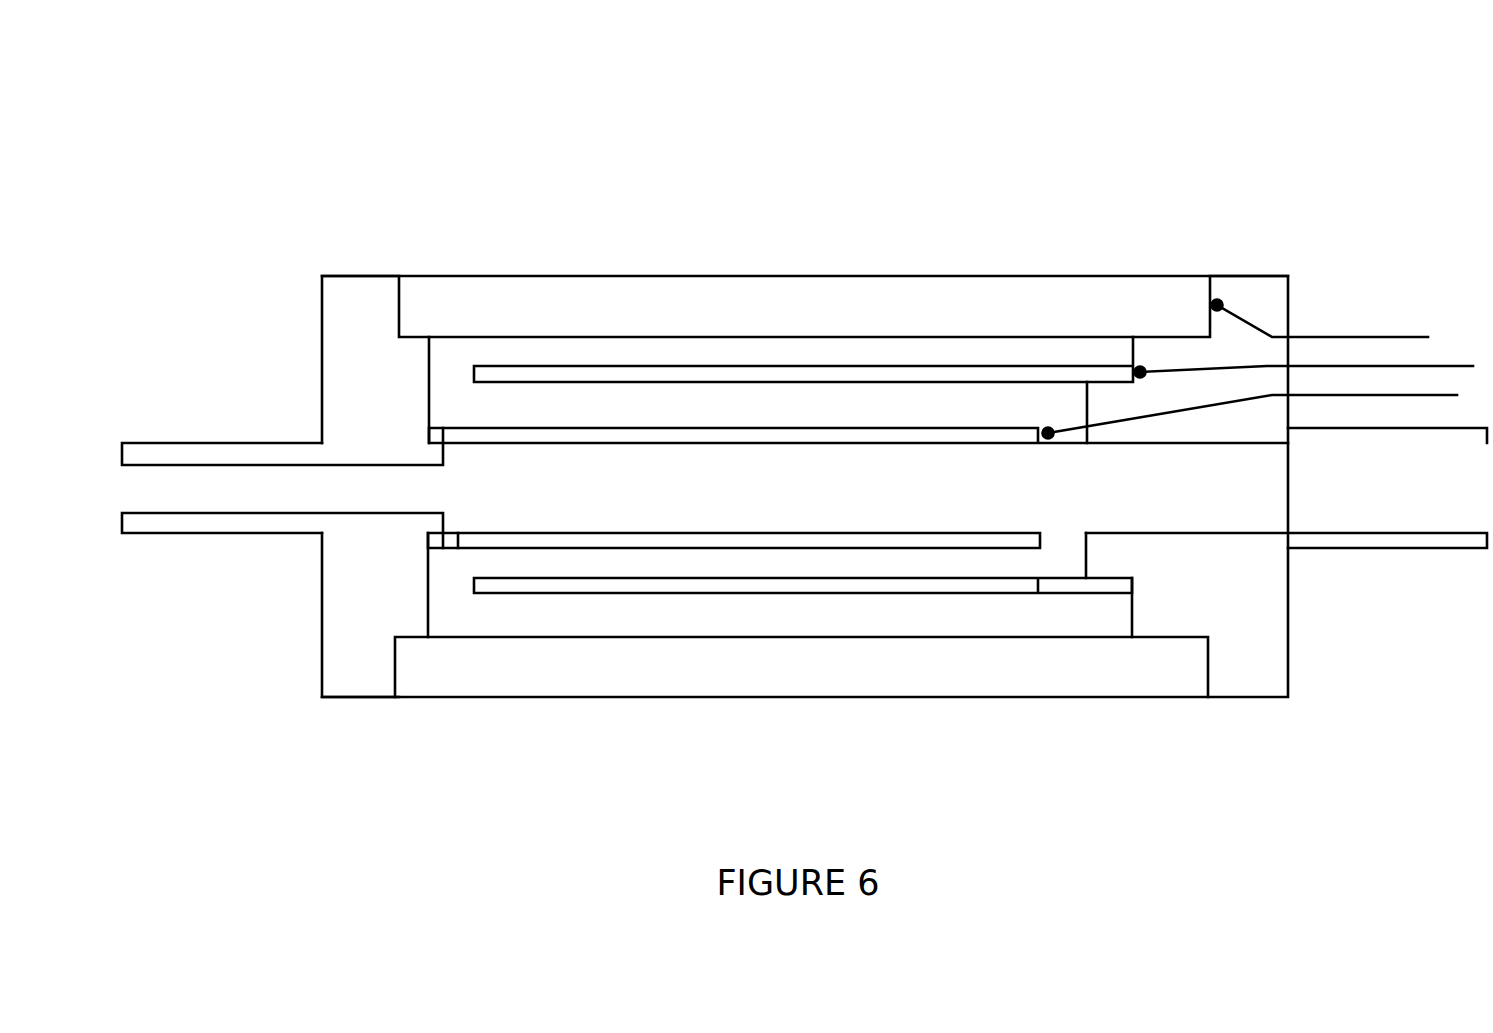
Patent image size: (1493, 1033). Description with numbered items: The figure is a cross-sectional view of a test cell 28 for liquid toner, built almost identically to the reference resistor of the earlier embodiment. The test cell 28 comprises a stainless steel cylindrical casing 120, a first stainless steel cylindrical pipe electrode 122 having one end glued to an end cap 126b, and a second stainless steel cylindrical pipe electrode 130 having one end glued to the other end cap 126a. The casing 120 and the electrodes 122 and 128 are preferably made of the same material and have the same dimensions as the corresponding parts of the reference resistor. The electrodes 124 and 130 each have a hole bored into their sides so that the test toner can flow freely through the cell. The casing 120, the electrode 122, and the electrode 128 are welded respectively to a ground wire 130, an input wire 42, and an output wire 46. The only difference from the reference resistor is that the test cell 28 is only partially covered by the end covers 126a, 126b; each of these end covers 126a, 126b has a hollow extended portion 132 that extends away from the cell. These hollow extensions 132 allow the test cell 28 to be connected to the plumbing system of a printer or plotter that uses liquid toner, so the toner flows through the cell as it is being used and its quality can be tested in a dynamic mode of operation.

The test cell 28 is at (770, 148).
The input wire 42 is at (1458, 366).
The output wire 46 is at (1368, 395).
The cylindrical casing 120 is at (968, 312).
The first cylindrical pipe electrode 122 is at (668, 375).
The electrode 124 is at (1063, 585).
The end cap 126a is at (340, 323).
The end cap 126b is at (1248, 663).
The electrode 128 is at (835, 435).
The second cylindrical pipe electrode 130 is at (1335, 337).
The hollow extended portion 132 is at (212, 495).